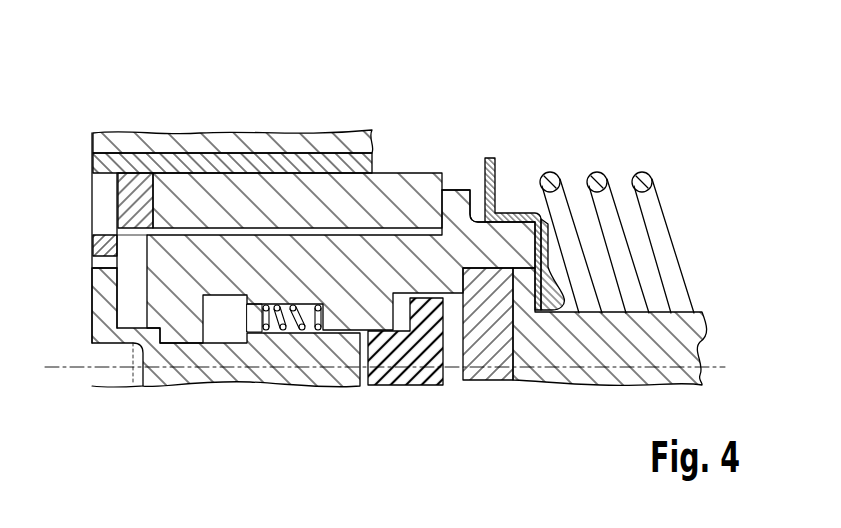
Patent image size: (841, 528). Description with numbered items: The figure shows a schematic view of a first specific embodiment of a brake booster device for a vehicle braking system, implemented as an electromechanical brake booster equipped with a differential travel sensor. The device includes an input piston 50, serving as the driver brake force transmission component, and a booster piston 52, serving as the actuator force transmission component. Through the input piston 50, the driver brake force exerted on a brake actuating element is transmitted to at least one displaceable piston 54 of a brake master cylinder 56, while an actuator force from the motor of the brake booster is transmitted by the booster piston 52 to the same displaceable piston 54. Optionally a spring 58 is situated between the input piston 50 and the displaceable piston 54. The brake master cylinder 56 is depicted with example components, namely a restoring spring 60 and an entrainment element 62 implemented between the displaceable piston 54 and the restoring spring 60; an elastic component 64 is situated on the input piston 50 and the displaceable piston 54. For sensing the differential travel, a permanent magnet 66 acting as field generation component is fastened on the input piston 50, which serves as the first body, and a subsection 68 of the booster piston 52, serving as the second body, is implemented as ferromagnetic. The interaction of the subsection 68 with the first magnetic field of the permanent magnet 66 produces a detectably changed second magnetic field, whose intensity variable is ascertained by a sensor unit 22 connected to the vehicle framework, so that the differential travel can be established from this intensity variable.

The sensor unit 22 is at (196, 162).
The input piston 50 is at (106, 298).
The booster piston 52 is at (398, 185).
The displaceable piston 54 is at (456, 198).
The brake master cylinder 56 is at (547, 388).
The spring 58 is at (293, 326).
The restoring spring 60 is at (597, 176).
The entrainment element 62 is at (498, 160).
The elastic component 64 is at (408, 358).
The permanent magnet 66 is at (107, 250).
The subsection of booster piston 68 is at (130, 210).